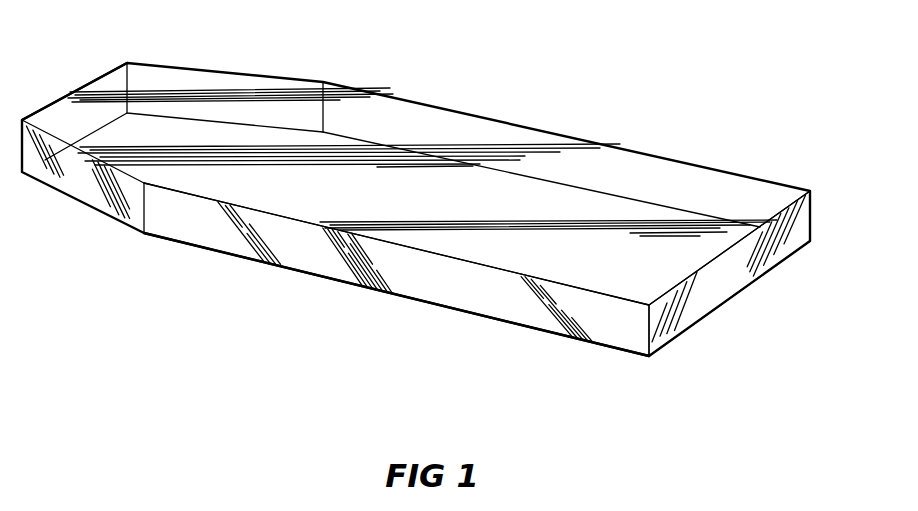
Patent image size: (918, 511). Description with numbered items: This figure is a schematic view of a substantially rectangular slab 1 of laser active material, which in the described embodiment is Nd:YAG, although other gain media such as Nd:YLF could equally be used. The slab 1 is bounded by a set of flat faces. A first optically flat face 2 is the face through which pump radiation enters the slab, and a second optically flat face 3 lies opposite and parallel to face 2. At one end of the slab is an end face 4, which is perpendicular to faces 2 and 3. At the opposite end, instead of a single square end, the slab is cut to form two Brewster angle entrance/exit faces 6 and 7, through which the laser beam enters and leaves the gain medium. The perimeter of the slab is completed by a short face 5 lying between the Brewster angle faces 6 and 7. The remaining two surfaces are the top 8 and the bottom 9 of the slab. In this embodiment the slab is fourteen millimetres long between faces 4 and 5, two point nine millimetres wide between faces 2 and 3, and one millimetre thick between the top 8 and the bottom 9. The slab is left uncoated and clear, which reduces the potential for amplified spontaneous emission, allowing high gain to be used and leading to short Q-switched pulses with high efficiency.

The slab 1 is at (627, 95).
The first optically flat face 2 is at (525, 310).
The second optically flat face 3 is at (737, 173).
The end face 4 is at (718, 282).
The face 5 is at (51, 104).
The Brewster angle entrance/exit face 6 is at (82, 190).
The Brewster angle entrance/exit face 7 is at (228, 72).
The top 8 is at (390, 192).
The bottom 9 is at (317, 277).